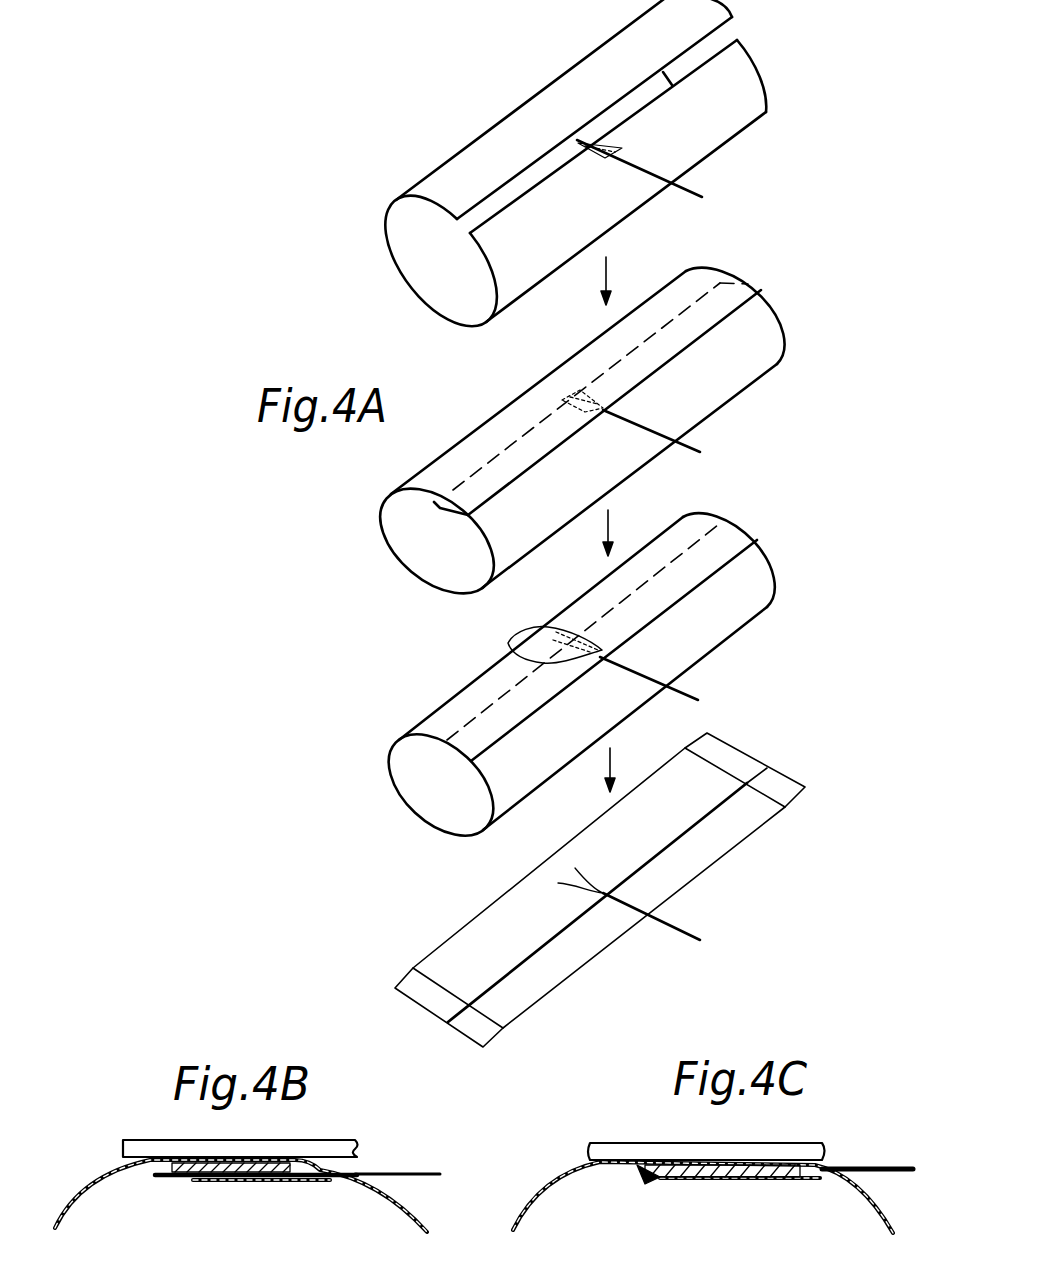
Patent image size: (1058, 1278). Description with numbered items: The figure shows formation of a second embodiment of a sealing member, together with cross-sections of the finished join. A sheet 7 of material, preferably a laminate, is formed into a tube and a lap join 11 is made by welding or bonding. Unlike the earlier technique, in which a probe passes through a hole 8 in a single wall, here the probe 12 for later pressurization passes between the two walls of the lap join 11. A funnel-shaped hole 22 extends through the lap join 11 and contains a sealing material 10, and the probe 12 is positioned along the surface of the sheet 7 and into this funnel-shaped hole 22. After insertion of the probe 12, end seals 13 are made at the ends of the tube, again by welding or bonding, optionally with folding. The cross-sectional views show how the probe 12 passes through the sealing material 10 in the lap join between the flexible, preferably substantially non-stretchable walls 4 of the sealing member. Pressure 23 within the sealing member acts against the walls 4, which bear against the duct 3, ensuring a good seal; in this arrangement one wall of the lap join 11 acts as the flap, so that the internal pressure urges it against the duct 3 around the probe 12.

In FIG. 4B, the duct 3 is at (333, 1145).
In FIG. 4C, the duct 3 is at (613, 1147).
In FIG. 4B, the walls 4 is at (90, 1185).
In FIG. 4C, the walls 4 is at (553, 1177).
In FIG. 4A, the sheet 7 is at (553, 88).
In FIG. 4B, the hole 8 is at (317, 1180).
In FIG. 4A, the sealing material 10 is at (603, 141).
In FIG. 4B, the sealing material 10 is at (188, 1168).
In FIG. 4C, the sealing material 10 is at (637, 1178).
In FIG. 4A, the lap join 11 is at (723, 531).
In FIG. 4A, the probe 12 is at (685, 177).
In FIG. 4B, the probe 12 is at (413, 1170).
In FIG. 4C, the probe 12 is at (880, 1166).
In FIG. 4A, the end seals 13 is at (737, 755).
In FIG. 4A, the funnel-shaped hole 22 is at (508, 647).
In FIG. 4C, the pressure 23 is at (722, 1188).